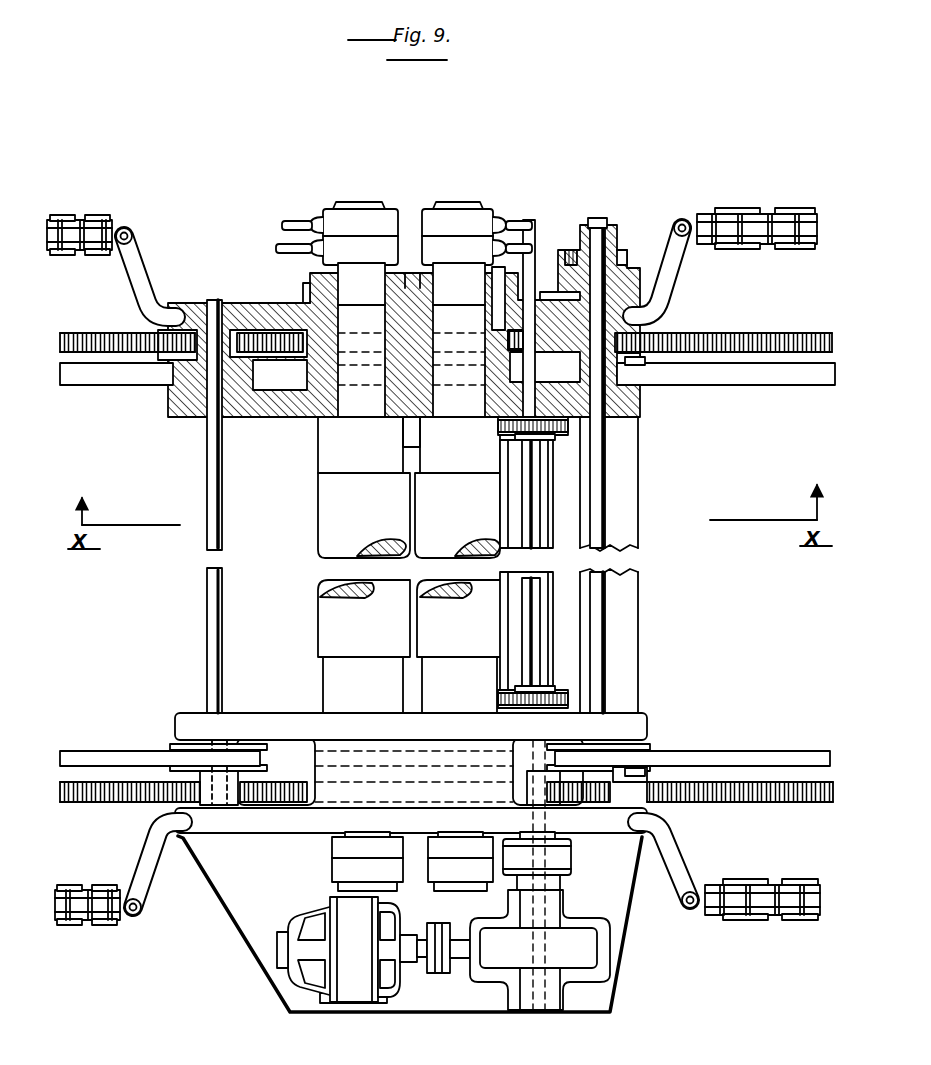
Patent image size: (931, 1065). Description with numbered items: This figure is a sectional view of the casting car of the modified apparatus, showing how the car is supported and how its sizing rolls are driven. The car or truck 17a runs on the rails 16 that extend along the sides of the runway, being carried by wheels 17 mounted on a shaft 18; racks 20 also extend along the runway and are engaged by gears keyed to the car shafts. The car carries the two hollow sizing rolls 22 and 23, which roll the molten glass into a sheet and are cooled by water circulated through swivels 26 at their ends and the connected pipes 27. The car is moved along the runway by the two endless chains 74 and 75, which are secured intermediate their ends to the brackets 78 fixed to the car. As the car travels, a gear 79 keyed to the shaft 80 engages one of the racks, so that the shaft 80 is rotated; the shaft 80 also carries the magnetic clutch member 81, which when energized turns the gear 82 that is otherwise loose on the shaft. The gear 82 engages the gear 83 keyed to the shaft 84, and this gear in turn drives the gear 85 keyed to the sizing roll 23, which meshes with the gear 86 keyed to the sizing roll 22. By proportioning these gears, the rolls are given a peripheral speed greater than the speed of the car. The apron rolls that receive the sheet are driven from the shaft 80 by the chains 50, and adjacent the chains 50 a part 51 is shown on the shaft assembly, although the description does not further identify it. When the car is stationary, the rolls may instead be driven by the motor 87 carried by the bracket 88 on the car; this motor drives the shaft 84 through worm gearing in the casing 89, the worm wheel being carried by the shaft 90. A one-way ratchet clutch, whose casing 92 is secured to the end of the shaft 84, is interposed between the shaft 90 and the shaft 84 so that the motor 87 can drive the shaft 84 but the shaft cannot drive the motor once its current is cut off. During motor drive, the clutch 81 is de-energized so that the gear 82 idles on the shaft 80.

The rails 16 is at (103, 375).
The wheels 17 is at (185, 386).
The car or truck 17a is at (200, 423).
The shaft 18 is at (215, 588).
The racks 20 is at (93, 335).
The sizing roll 22 is at (330, 490).
The sizing roll 23 is at (430, 508).
The swivels 26 is at (355, 245).
The pipes 27 is at (286, 228).
The chains 50 is at (560, 432).
The washer 51 is at (545, 688).
The endless chain 74 is at (118, 212).
The endless chain 75 is at (78, 932).
The brackets 78 is at (128, 278).
The gear 79 is at (640, 350).
The shaft 80 is at (603, 522).
The magnetic clutch member 81 is at (592, 220).
The gear 82 is at (640, 270).
The gear 83 is at (545, 268).
The shaft 84 is at (525, 368).
The gear 85 is at (418, 278).
The gear 86 is at (308, 288).
The motor 87 is at (358, 988).
The bracket 88 is at (240, 905).
The casing 89 is at (580, 948).
The shaft 90 is at (535, 1000).
The casing 92 is at (572, 855).